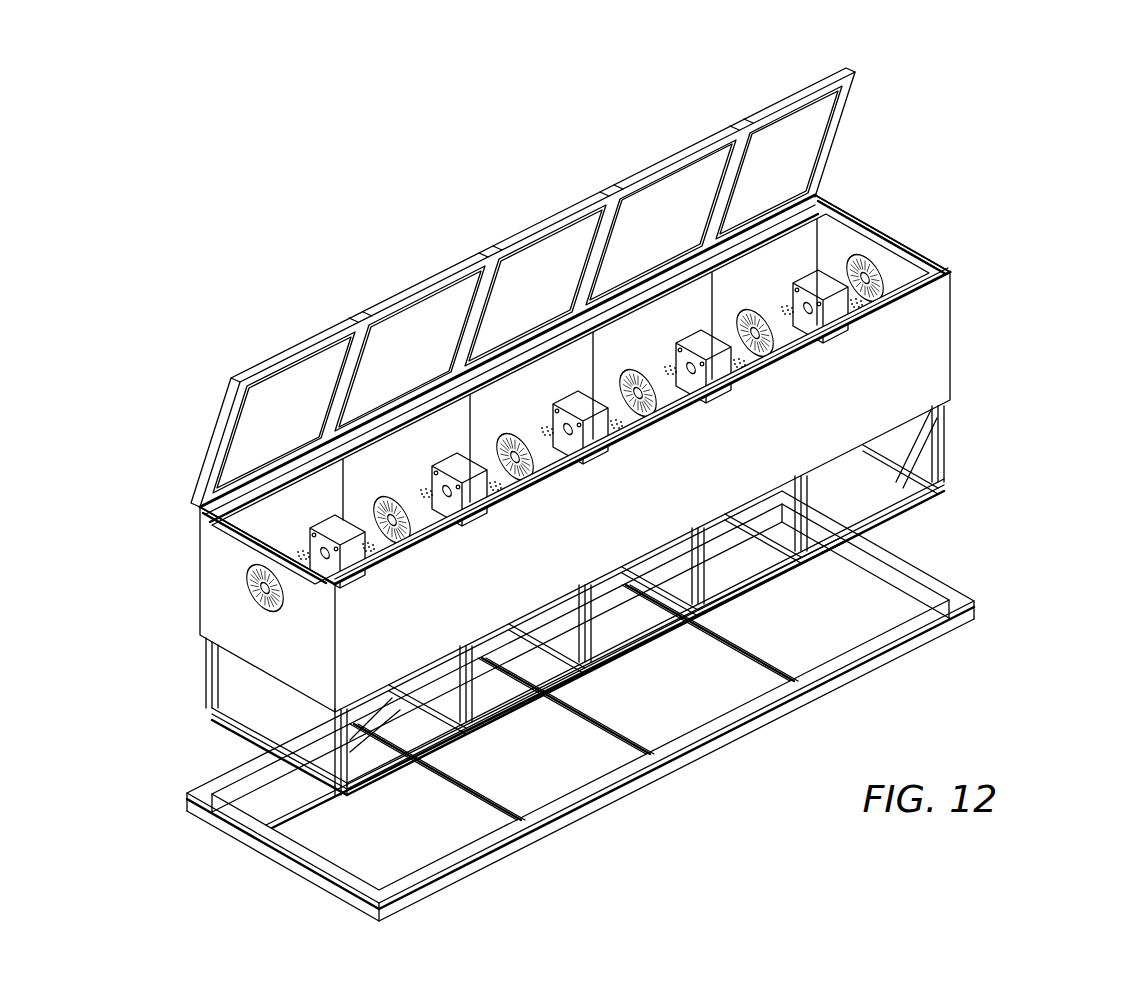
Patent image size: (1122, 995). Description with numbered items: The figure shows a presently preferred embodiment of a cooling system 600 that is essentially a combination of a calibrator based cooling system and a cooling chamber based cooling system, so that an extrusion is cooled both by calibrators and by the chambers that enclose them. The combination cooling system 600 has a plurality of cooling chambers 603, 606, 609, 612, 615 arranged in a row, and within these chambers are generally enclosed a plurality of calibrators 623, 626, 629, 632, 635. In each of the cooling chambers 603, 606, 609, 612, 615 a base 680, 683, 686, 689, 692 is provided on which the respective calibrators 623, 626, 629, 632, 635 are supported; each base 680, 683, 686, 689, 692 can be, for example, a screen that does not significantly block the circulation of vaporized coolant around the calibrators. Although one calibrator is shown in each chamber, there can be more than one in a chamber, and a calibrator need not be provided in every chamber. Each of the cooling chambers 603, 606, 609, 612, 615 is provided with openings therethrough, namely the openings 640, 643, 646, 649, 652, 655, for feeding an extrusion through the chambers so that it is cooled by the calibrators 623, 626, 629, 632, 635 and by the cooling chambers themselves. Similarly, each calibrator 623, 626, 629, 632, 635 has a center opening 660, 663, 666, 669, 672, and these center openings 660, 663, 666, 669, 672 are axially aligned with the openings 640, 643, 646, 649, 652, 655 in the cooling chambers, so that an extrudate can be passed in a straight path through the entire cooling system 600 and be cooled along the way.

The cooling system 600 is at (1019, 358).
The cooling chamber 603 is at (302, 428).
The cooling chamber 606 is at (424, 352).
The cooling chamber 609 is at (542, 305).
The cooling chamber 612 is at (675, 240).
The cooling chamber 615 is at (790, 185).
The calibrator 623 is at (350, 552).
The calibrator 626 is at (473, 497).
The calibrator 629 is at (597, 434).
The calibrator 632 is at (718, 374).
The calibrator 635 is at (835, 312).
The opening 640 is at (247, 590).
The opening 643 is at (376, 500).
The opening 646 is at (508, 440).
The opening 649 is at (625, 380).
The opening 652 is at (745, 318).
The opening 655 is at (850, 265).
The center opening 660 is at (327, 560).
The center opening 663 is at (448, 498).
The center opening 666 is at (570, 437).
The center opening 669 is at (693, 376).
The center opening 672 is at (809, 316).
The base 680 is at (306, 552).
The base 683 is at (500, 492).
The base 686 is at (620, 428).
The base 689 is at (745, 368).
The base 692 is at (862, 306).